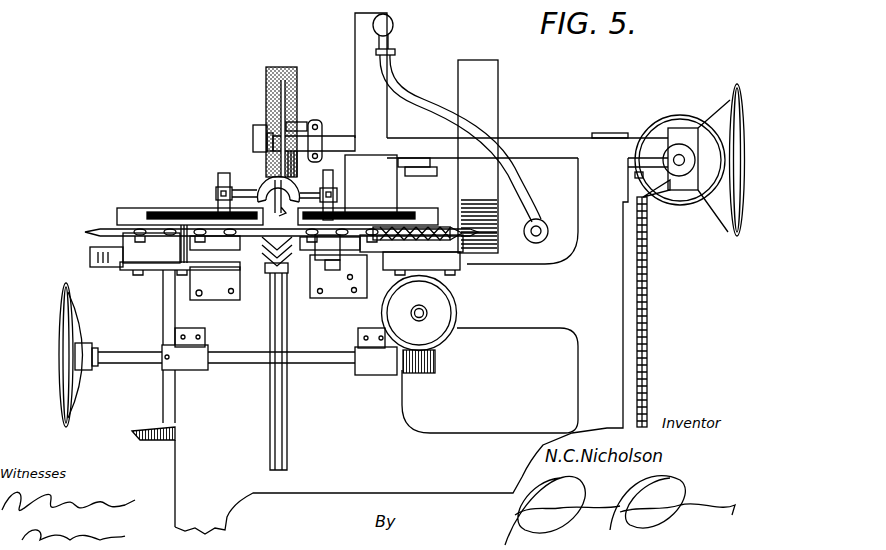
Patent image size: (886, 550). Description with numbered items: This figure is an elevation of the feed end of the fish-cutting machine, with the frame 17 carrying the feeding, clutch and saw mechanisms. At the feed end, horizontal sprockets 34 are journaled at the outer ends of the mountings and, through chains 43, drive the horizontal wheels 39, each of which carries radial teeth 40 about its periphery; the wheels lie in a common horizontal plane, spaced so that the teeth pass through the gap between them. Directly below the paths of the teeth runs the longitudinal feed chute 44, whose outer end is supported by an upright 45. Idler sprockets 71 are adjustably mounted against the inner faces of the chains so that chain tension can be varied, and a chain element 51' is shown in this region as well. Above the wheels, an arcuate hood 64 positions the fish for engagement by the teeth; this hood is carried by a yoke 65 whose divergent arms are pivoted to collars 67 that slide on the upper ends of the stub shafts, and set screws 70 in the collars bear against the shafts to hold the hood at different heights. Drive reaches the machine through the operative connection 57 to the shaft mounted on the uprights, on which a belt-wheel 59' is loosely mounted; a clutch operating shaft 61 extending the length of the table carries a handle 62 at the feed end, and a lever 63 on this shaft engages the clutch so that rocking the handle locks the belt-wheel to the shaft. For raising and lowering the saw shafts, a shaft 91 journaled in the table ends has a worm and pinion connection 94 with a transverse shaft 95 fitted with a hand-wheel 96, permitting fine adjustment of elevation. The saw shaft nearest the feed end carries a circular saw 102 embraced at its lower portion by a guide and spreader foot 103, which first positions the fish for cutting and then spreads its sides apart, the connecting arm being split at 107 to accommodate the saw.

The frame 17 is at (425, 445).
The horizontal sprocket 34 is at (177, 234).
The horizontal wheel 39 is at (278, 267).
The radial teeth 40 is at (190, 231).
The chain 43 is at (173, 212).
The feed chute 44 is at (263, 293).
The upright 45 is at (278, 303).
The saw blade rod 51' is at (268, 217).
The operative connection 57 is at (652, 404).
The belt-wheel 59' is at (504, 155).
The clutch operating shaft 61 is at (545, 240).
The handle 62 is at (423, 90).
The lever 63 is at (543, 162).
The hood 64 is at (263, 186).
The yoke 65 is at (258, 188).
The collar 67 is at (216, 189).
The set screw 70 is at (218, 194).
The idler sprocket 71 is at (140, 240).
The shaft 91 is at (424, 313).
The worm and pinion connection 94 is at (428, 340).
The transverse shaft 95 is at (335, 362).
The hand-wheel 96 is at (77, 407).
The circular saw 102 is at (287, 89).
The guide and spreader foot 103 is at (295, 190).
The split 107 is at (291, 143).